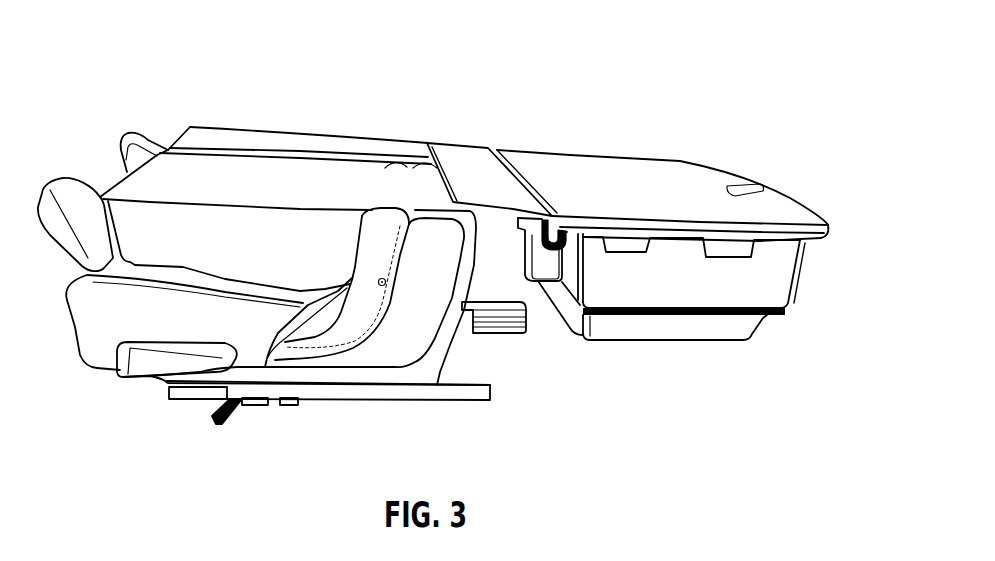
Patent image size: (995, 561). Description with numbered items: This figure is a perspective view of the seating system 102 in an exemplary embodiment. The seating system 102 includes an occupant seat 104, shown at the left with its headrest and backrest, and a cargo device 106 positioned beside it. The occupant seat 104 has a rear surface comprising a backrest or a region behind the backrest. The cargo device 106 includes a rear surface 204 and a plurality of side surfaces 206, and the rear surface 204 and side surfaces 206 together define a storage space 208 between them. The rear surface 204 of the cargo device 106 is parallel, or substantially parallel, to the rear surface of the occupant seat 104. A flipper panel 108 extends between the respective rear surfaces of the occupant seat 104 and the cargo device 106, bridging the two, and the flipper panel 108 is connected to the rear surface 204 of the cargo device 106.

The seating system 102 is at (766, 32).
The occupant seat 104 is at (220, 129).
The cargo device 106 is at (777, 269).
The flipper panel 108 is at (478, 143).
The rear surface 204 is at (697, 161).
The side surfaces 206 is at (770, 304).
The storage space 208 is at (634, 241).